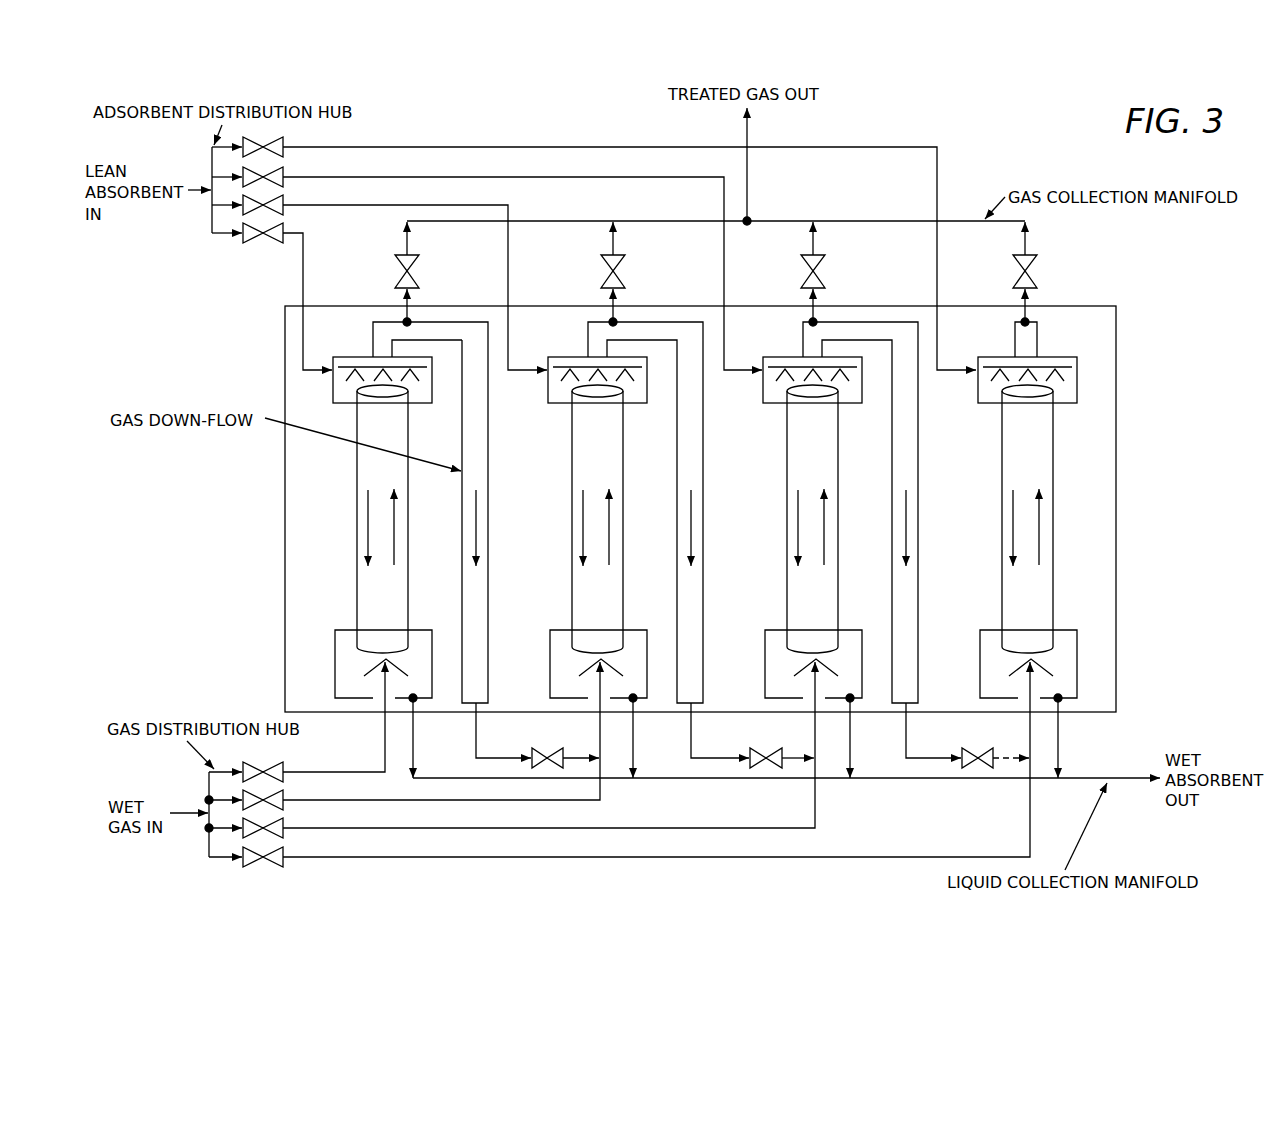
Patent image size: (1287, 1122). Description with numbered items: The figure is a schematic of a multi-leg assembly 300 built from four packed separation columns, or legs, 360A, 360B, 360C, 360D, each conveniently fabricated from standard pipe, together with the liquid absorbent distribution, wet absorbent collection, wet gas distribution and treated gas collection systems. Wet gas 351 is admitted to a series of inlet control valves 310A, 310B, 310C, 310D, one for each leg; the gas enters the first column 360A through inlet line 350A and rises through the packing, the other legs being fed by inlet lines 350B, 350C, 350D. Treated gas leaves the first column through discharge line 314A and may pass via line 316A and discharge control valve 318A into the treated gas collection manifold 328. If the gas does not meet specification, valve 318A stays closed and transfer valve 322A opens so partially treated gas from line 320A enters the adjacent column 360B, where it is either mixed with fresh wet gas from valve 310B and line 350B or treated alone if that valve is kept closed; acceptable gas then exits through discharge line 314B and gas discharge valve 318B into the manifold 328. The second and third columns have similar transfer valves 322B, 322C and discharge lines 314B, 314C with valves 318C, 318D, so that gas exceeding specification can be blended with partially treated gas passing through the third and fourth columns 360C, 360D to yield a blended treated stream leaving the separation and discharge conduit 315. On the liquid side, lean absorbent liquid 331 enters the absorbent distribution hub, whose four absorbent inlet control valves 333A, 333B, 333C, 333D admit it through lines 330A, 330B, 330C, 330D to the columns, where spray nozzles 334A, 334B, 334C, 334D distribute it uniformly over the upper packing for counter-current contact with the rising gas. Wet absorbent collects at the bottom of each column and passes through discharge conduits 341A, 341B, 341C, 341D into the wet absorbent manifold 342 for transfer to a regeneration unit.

The multi-leg assembly 300 is at (1130, 348).
The inlet control valve 310A is at (287, 770).
The inlet control valve 310B is at (287, 798).
The inlet control valve 310C is at (287, 826).
The inlet control valve 310D is at (287, 854).
The discharge line 314A is at (372, 335).
The discharge line 314B is at (587, 335).
The discharge line 314C is at (802, 336).
The separation and discharge conduit 315 is at (752, 133).
The line 316A is at (412, 318).
The discharge control valve 318A is at (415, 270).
The gas discharge valve 318B is at (618, 272).
The gas discharge valve 318C is at (820, 272).
The gas discharge valve 318D is at (1032, 272).
The line 320A is at (473, 469).
The transfer valve 322A is at (530, 750).
The transfer valve 322B is at (752, 750).
The transfer valve 322C is at (958, 750).
The treated gas collection manifold 328 is at (547, 220).
The absorbent line 330A is at (305, 264).
The absorbent line 330B is at (428, 205).
The absorbent line 330C is at (608, 177).
The absorbent line 330D is at (655, 147).
The lean absorbent liquid 331 is at (196, 196).
The absorbent inlet control valve 333A is at (287, 230).
The absorbent inlet control valve 333B is at (287, 200).
The absorbent inlet control valve 333C is at (287, 172).
The absorbent inlet control valve 333D is at (287, 144).
The spray nozzles 334A is at (352, 405).
The spray nozzles 334B is at (549, 398).
The spray nozzles 334C is at (764, 405).
The spray nozzles 334D is at (986, 405).
The discharge conduit 341A is at (414, 742).
The discharge conduit 341B is at (634, 742).
The discharge conduit 341C is at (851, 742).
The discharge conduit 341D is at (1059, 742).
The wet absorbent manifold 342 is at (1116, 781).
The inlet line 350A is at (385, 745).
The inlet line 350B is at (464, 800).
The inlet line 350C is at (650, 826).
The inlet line 350D is at (880, 856).
The wet gas 351 is at (186, 814).
The separation column 360A is at (352, 503).
The separation column 360B is at (560, 526).
The separation column 360C is at (775, 531).
The separation column 360D is at (995, 531).